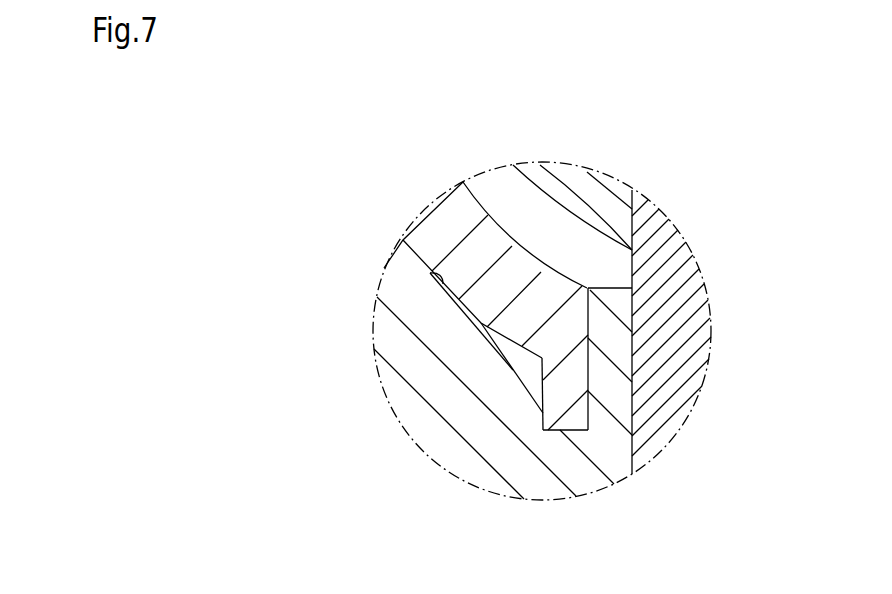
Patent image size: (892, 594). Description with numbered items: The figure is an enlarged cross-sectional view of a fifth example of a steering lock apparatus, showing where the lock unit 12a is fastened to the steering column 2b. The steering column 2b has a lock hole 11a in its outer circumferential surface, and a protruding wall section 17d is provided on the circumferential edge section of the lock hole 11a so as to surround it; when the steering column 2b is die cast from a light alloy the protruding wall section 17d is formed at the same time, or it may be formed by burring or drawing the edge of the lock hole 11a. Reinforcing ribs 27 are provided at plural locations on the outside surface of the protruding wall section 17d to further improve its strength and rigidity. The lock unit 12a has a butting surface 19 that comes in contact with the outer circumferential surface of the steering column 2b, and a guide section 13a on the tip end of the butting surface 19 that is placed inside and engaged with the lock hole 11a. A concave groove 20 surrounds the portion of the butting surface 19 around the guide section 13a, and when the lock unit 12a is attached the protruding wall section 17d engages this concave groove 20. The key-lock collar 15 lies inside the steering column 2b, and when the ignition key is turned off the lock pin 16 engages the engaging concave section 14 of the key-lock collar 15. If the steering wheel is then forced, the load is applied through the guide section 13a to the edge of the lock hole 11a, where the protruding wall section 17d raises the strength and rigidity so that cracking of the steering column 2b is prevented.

The steering column 2b is at (441, 223).
The key-lock collar 15 is at (537, 168).
The lock hole 11a is at (587, 296).
The engaging concave section 14 is at (637, 233).
The lock pin 16 is at (663, 393).
The guide section 13a is at (613, 331).
The butting surface 19 is at (430, 273).
The reinforcing ribs 27 is at (528, 367).
The protruding wall section 17d is at (565, 400).
The concave groove 20 is at (571, 429).
The lock unit 12a is at (410, 395).